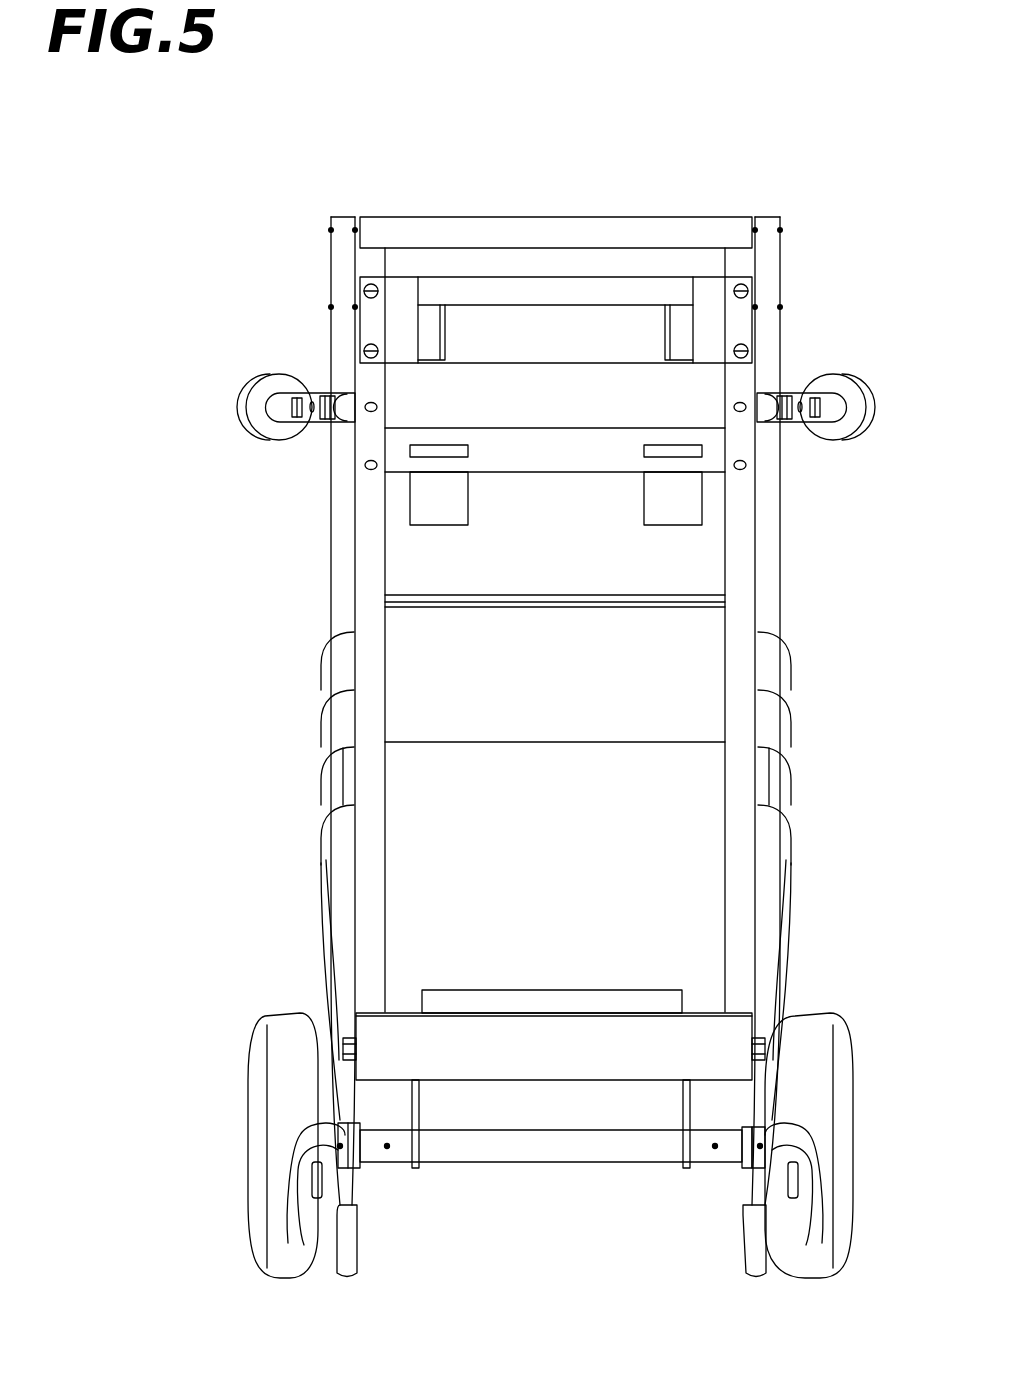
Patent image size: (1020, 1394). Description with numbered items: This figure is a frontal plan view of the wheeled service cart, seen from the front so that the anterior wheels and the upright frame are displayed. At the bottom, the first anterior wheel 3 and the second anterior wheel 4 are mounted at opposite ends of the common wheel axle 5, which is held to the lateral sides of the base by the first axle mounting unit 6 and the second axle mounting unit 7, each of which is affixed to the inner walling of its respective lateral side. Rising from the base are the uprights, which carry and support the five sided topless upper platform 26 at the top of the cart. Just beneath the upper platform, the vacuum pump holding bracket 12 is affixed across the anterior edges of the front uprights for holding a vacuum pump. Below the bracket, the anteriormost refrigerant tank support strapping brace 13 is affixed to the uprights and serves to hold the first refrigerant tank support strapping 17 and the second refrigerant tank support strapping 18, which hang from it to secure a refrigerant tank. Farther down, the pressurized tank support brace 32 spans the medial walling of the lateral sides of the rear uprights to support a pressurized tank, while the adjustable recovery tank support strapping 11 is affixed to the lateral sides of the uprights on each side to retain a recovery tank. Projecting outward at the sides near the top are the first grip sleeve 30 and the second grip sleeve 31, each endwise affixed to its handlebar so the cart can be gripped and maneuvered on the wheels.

The first anterior wheel 3 is at (825, 1037).
The second anterior wheel 4 is at (277, 1036).
The common wheel axle 5 is at (537, 1146).
The first axle mounting unit 6 is at (688, 1168).
The second axle mounting unit 7 is at (413, 1168).
The adjustable recovery tank support strapping 11 is at (333, 787).
The vacuum pump holding bracket 12 is at (485, 290).
The anteriormost refrigerant tank support strapping brace 13 is at (713, 450).
The first refrigerant tank support strapping 17 is at (427, 505).
The second refrigerant tank support strapping 18 is at (690, 507).
The five sided topless upper platform 26 is at (596, 232).
The first grip sleeve 30 is at (254, 390).
The second grip sleeve 31 is at (868, 428).
The pressurized tank support brace 32 is at (682, 695).